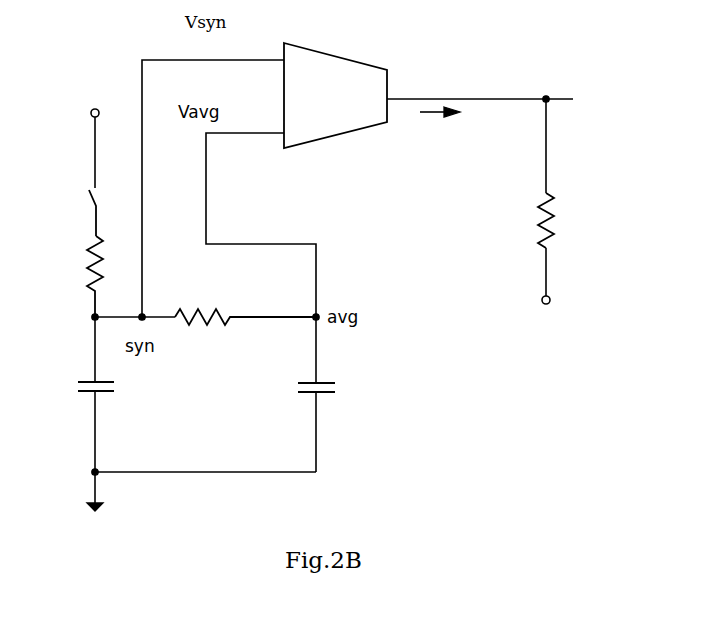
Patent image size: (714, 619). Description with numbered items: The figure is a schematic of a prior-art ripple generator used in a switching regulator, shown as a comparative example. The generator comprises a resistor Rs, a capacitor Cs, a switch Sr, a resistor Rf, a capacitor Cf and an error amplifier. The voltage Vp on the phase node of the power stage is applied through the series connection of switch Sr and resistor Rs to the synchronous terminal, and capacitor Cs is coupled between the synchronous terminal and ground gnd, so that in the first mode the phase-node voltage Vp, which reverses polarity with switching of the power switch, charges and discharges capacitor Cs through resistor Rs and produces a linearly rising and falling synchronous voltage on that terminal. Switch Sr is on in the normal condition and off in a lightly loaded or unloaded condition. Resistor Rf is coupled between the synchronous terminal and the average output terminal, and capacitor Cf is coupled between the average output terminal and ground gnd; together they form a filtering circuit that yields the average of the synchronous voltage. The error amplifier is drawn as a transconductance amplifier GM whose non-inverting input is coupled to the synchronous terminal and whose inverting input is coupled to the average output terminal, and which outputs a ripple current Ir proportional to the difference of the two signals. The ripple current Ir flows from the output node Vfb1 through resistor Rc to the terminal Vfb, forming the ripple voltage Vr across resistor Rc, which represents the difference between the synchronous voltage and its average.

The voltage on the phase node Vp is at (91, 96).
The switch Sr is at (67, 213).
The resistor Rs is at (69, 276).
The capacitor Cs is at (74, 394).
The resistor Rf is at (245, 333).
The capacitor Cf is at (301, 394).
The ground gnd is at (67, 494).
The transconductance amplifier GM is at (335, 95).
The ripple current Ir is at (440, 127).
The node Vfb1 is at (552, 85).
The resistor Rc is at (525, 197).
The ripple voltage Vr is at (590, 222).
The feedback voltage terminal Vfb is at (545, 320).